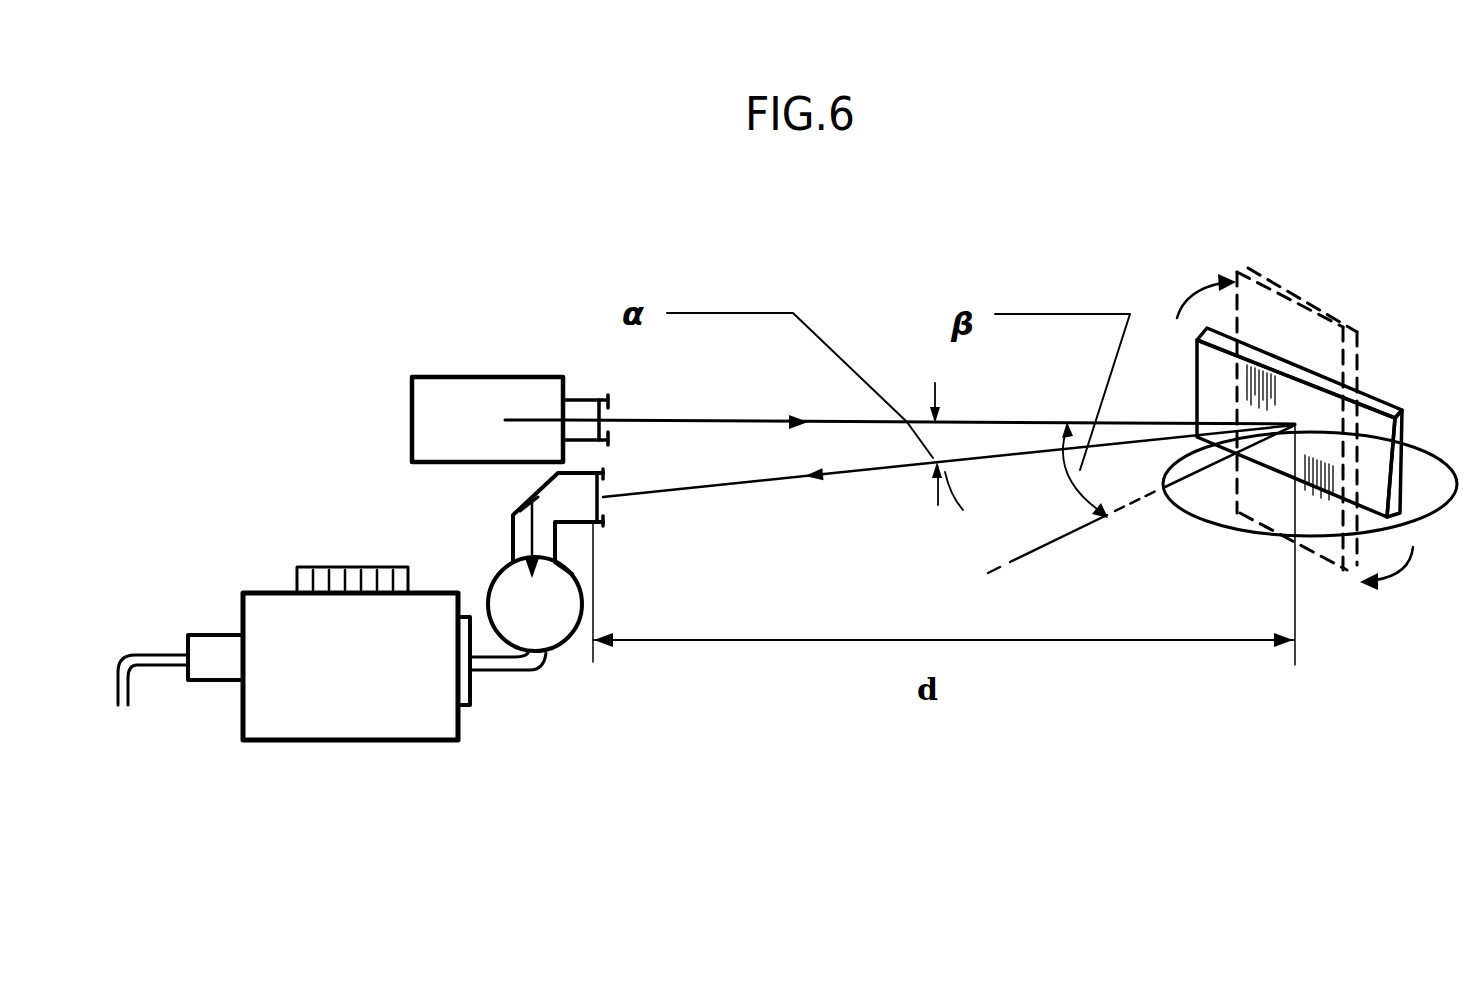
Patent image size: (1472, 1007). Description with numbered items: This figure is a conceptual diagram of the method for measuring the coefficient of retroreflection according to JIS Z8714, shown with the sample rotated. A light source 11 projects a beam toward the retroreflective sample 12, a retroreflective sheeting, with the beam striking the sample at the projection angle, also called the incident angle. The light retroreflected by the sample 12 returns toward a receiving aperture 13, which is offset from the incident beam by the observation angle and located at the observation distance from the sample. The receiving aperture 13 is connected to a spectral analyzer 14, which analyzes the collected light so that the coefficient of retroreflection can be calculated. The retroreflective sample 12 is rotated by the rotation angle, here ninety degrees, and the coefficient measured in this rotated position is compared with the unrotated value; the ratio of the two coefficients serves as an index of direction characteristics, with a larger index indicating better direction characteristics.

The light source 11 is at (478, 365).
The retroreflective sample 12 is at (1332, 360).
The receiving aperture 13 is at (622, 537).
The spectral analyzer 14 is at (290, 556).